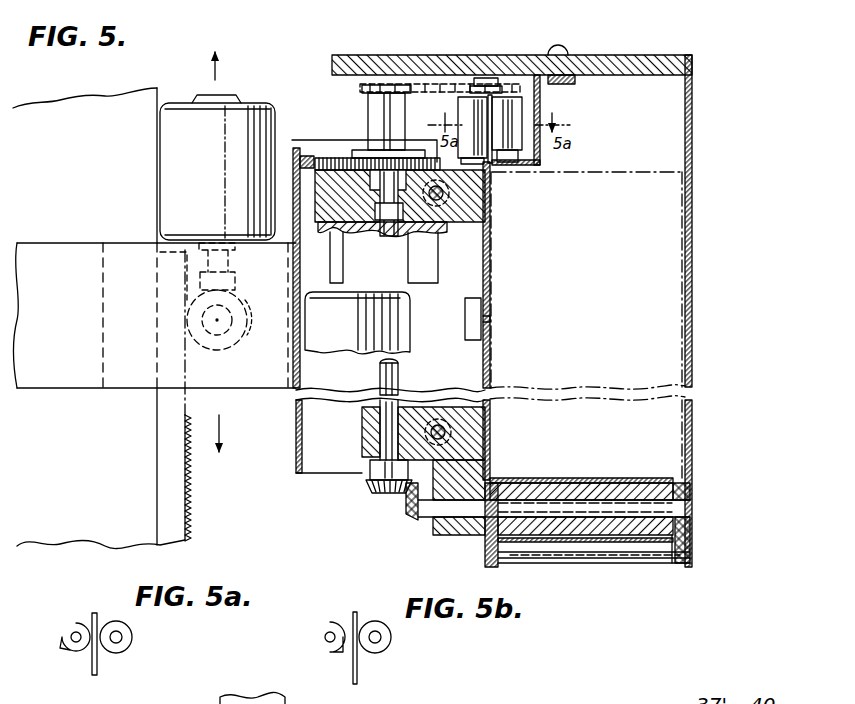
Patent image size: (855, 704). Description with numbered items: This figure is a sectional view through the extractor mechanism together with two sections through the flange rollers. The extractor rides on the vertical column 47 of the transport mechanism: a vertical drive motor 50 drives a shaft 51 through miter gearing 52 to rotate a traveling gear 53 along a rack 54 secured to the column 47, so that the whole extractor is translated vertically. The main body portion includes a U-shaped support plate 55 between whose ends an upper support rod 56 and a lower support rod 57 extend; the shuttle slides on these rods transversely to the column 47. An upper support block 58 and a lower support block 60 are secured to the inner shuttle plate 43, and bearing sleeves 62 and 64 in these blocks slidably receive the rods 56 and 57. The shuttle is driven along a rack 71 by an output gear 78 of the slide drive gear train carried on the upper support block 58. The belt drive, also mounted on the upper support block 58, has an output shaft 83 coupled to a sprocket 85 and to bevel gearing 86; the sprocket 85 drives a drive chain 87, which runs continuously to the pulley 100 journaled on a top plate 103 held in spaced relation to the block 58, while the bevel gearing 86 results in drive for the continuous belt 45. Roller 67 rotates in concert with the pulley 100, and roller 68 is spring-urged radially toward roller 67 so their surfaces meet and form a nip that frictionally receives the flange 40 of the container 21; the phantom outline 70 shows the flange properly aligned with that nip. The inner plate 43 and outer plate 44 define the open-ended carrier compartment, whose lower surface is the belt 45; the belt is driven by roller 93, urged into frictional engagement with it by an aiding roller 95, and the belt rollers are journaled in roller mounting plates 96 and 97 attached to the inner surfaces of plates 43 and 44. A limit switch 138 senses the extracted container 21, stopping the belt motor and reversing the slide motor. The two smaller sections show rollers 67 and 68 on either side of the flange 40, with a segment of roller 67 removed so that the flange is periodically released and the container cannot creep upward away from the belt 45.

In FIG. 5, the vertical column 47 is at (96, 204).
In FIG. 5, the vertical drive motor 50 is at (207, 180).
In FIG. 5, the miter gearing 52 is at (193, 300).
In FIG. 5, the traveling gear 53 is at (193, 338).
In FIG. 5, the shaft 51 is at (226, 352).
In FIG. 5, the rack 54 is at (192, 490).
In FIG. 5, the U-shaped support plate 55 is at (296, 470).
In FIG. 5, the rack 71 is at (298, 147).
In FIG. 5, the output gear 78 is at (323, 157).
In FIG. 5, the sprocket 85 is at (370, 84).
In FIG. 5, the drive chain 87 is at (433, 83).
In FIG. 5, the pulley 100 is at (486, 92).
In FIG. 5, the top plate 103 is at (644, 58).
In FIG. 5, the roller 67 is at (458, 113).
In FIG. 5a, the roller 67 is at (85, 626).
In FIG. 5b, the roller 67 is at (331, 653).
In FIG. 5, the roller 68 is at (522, 106).
In FIG. 5a, the roller 68 is at (132, 638).
In FIG. 5b, the roller 68 is at (386, 650).
In FIG. 5, the container flange 40 is at (493, 130).
In FIG. 5a, the container flange 40 is at (98, 675).
In FIG. 5b, the container flange 40 is at (358, 683).
In FIG. 5, the upper support block 58 is at (475, 200).
In FIG. 5, the upper support rod 56 is at (452, 212).
In FIG. 5, the output shaft 83 is at (380, 197).
In FIG. 5, the bearing sleeve 62 is at (400, 240).
In FIG. 5, the bearing sleeve 64 is at (441, 420).
In FIG. 5, the inner plate 43 is at (490, 286).
In FIG. 5, the limit switch 138 is at (482, 336).
In FIG. 5, the lower support block 60 is at (470, 466).
In FIG. 5, the lower support rod 57 is at (452, 438).
In FIG. 5, the bevel gearing 86 is at (396, 500).
In FIG. 5, the continuous belt 45 is at (600, 542).
In FIG. 5, the roller mounting plate 96 is at (493, 568).
In FIG. 5, the aiding roller 95 is at (652, 558).
In FIG. 5, the drive roller 93 is at (692, 527).
In FIG. 5, the roller mounting plate 97 is at (681, 568).
In FIG. 5, the outer plate 44 is at (693, 222).
In FIG. 5, the phantom outline 70 is at (647, 180).
In FIG. 5, the container 21 is at (665, 382).